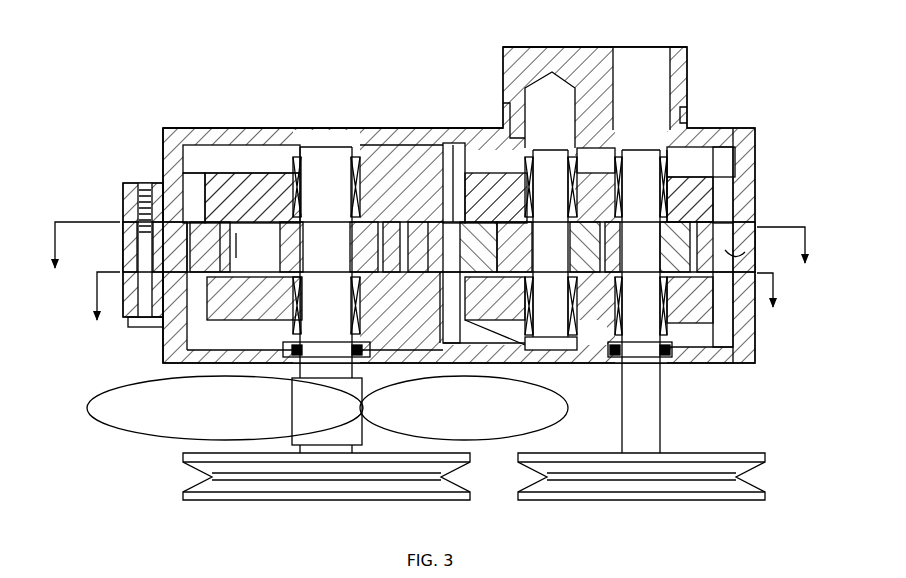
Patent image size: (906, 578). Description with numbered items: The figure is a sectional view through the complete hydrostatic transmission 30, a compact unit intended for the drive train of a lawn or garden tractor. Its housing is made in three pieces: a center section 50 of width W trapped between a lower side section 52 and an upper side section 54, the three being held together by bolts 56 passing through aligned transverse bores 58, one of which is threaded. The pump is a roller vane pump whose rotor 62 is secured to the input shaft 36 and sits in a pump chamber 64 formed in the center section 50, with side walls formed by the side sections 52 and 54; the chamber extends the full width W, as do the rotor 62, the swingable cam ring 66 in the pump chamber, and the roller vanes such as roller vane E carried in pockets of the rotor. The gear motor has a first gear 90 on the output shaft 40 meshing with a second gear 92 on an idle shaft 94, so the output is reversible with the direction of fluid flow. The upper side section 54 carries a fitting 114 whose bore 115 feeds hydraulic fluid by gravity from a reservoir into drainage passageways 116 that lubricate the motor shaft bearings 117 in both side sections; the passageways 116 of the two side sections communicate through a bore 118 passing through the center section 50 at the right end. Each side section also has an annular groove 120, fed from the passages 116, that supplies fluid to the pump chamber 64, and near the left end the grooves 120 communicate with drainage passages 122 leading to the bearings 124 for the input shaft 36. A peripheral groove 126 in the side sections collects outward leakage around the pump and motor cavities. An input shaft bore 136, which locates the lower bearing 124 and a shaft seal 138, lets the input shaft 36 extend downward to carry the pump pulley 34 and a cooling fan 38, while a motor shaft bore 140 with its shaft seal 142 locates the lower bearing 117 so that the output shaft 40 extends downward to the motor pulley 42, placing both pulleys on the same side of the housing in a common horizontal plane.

The hydrostatic transmission 30 is at (125, 108).
The pump pulley 34 is at (262, 502).
The input shaft 36 is at (334, 335).
The cooling fan 38 is at (425, 433).
The output shaft 40 is at (652, 425).
The motor pulley 42 is at (620, 503).
The center section 50 is at (123, 238).
The lower side section 52 is at (718, 362).
The upper side section 54 is at (327, 128).
The bolts 56 is at (133, 327).
The transverse bores 58 is at (143, 185).
The rotor 62 is at (368, 230).
The pump chamber 64 is at (455, 255).
The cam ring 66 is at (220, 233).
The first gear 90 is at (667, 167).
The second gear 92 is at (512, 235).
The idle shaft 94 is at (538, 305).
The fitting 114 is at (687, 45).
The bore 115 is at (655, 78).
The drainage passageways 116 is at (508, 163).
The motor shaft bearings 117 is at (577, 167).
The bore 118 is at (732, 255).
The annular groove 120 is at (193, 215).
The drainage passages 122 is at (265, 157).
The bearings 124 is at (365, 162).
The groove 126 is at (170, 217).
The input shaft bore 136 is at (300, 347).
The shaft seal 138 is at (363, 378).
The motor shaft bore 140 is at (667, 360).
The shaft seal 142 is at (618, 347).
The roller vane E is at (258, 256).
The width W is at (380, 226).